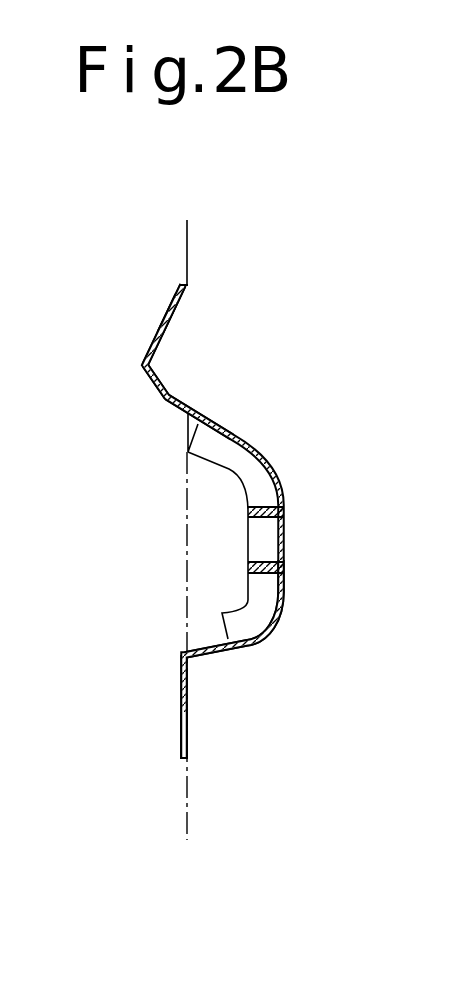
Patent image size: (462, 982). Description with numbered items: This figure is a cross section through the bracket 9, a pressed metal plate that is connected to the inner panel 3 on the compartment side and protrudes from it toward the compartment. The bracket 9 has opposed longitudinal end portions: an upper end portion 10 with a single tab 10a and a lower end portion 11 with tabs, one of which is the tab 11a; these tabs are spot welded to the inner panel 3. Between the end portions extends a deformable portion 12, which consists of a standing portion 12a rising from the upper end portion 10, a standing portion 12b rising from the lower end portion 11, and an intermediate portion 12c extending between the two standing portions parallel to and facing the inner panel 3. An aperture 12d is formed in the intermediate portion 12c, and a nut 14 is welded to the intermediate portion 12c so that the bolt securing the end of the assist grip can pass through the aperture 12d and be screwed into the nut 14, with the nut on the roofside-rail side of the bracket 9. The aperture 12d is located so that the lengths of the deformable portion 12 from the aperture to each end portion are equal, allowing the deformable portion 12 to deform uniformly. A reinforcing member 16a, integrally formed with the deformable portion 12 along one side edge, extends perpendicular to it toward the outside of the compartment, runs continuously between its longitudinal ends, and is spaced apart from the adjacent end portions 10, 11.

The inner panel 3 is at (188, 547).
The bracket 9 is at (221, 424).
The upper end portion 10 is at (197, 292).
The tab 10a is at (178, 313).
The lower end portion 11 is at (195, 730).
The tab 11a is at (181, 731).
The deformable portion 12 is at (276, 467).
The standing portion 12a is at (188, 413).
The standing portion 12b is at (250, 641).
The intermediate portion 12c is at (279, 494).
The aperture 12d is at (282, 548).
The nut 14 is at (274, 585).
The reinforcing member 16a is at (231, 471).